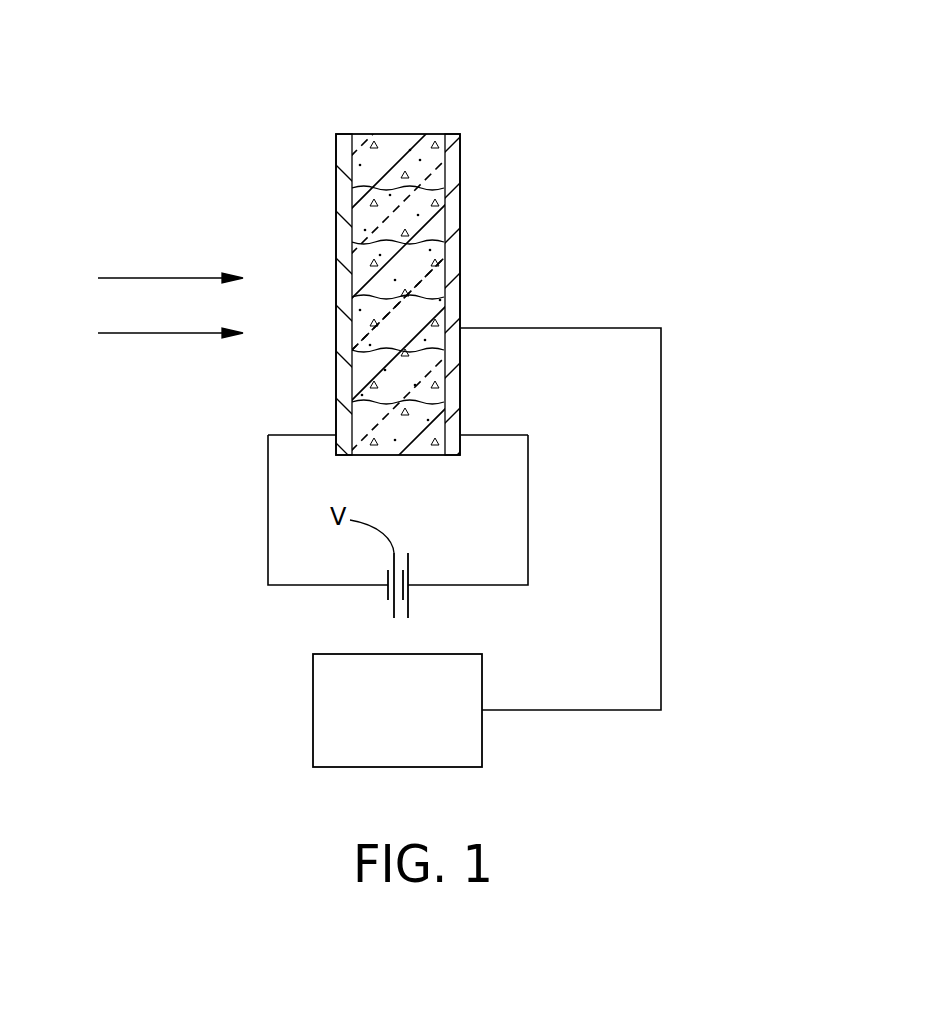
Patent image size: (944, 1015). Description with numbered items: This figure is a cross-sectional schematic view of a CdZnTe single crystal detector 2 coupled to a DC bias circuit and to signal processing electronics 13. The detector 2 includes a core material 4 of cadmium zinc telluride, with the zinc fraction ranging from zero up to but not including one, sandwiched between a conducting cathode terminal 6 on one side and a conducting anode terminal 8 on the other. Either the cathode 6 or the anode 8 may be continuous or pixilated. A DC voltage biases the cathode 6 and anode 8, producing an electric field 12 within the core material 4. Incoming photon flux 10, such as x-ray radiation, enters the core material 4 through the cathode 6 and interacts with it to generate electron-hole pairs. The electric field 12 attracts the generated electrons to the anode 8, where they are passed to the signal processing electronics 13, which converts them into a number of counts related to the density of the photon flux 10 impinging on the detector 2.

The CdZnTe single crystal detector 2 is at (553, 185).
The core material 4 is at (388, 440).
The cathode terminal 6 is at (343, 190).
The anode terminal 8 is at (456, 394).
The photon flux 10 is at (172, 333).
The electric field 12 is at (403, 293).
The signal processing electronics 13 is at (313, 690).